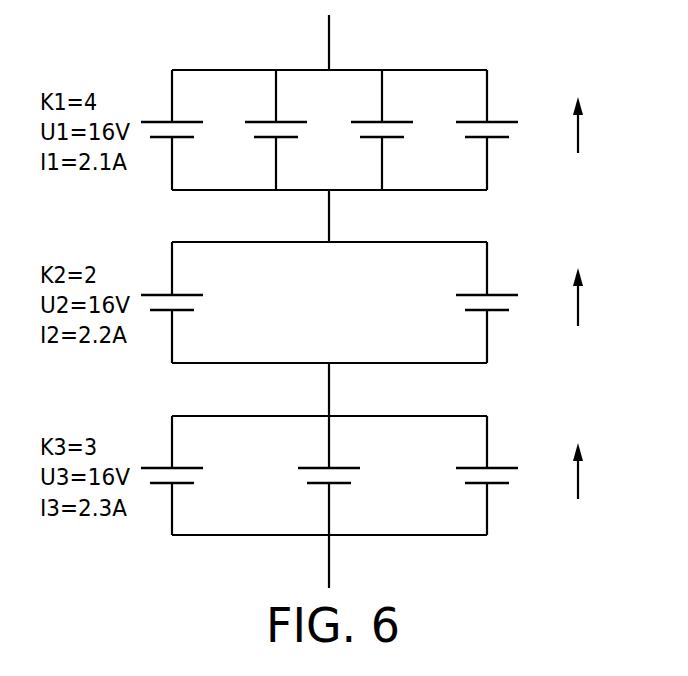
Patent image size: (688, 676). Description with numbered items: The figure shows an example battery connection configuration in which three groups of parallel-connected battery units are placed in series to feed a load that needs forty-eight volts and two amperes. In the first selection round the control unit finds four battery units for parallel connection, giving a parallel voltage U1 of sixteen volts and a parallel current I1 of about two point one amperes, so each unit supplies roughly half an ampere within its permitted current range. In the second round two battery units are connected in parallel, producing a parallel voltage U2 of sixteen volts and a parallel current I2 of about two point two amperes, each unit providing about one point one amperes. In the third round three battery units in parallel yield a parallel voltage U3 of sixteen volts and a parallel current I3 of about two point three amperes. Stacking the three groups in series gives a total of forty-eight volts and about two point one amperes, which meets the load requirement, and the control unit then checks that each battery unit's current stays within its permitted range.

The parallel voltage of the first selection round U1 is at (531, 95).
The parallel current of the first selection round I1 is at (585, 125).
The parallel voltage of the second selection round U2 is at (531, 267).
The parallel current of the second selection round I2 is at (585, 297).
The parallel voltage of the third selection round U3 is at (531, 441).
The parallel current of the third selection round I3 is at (585, 471).